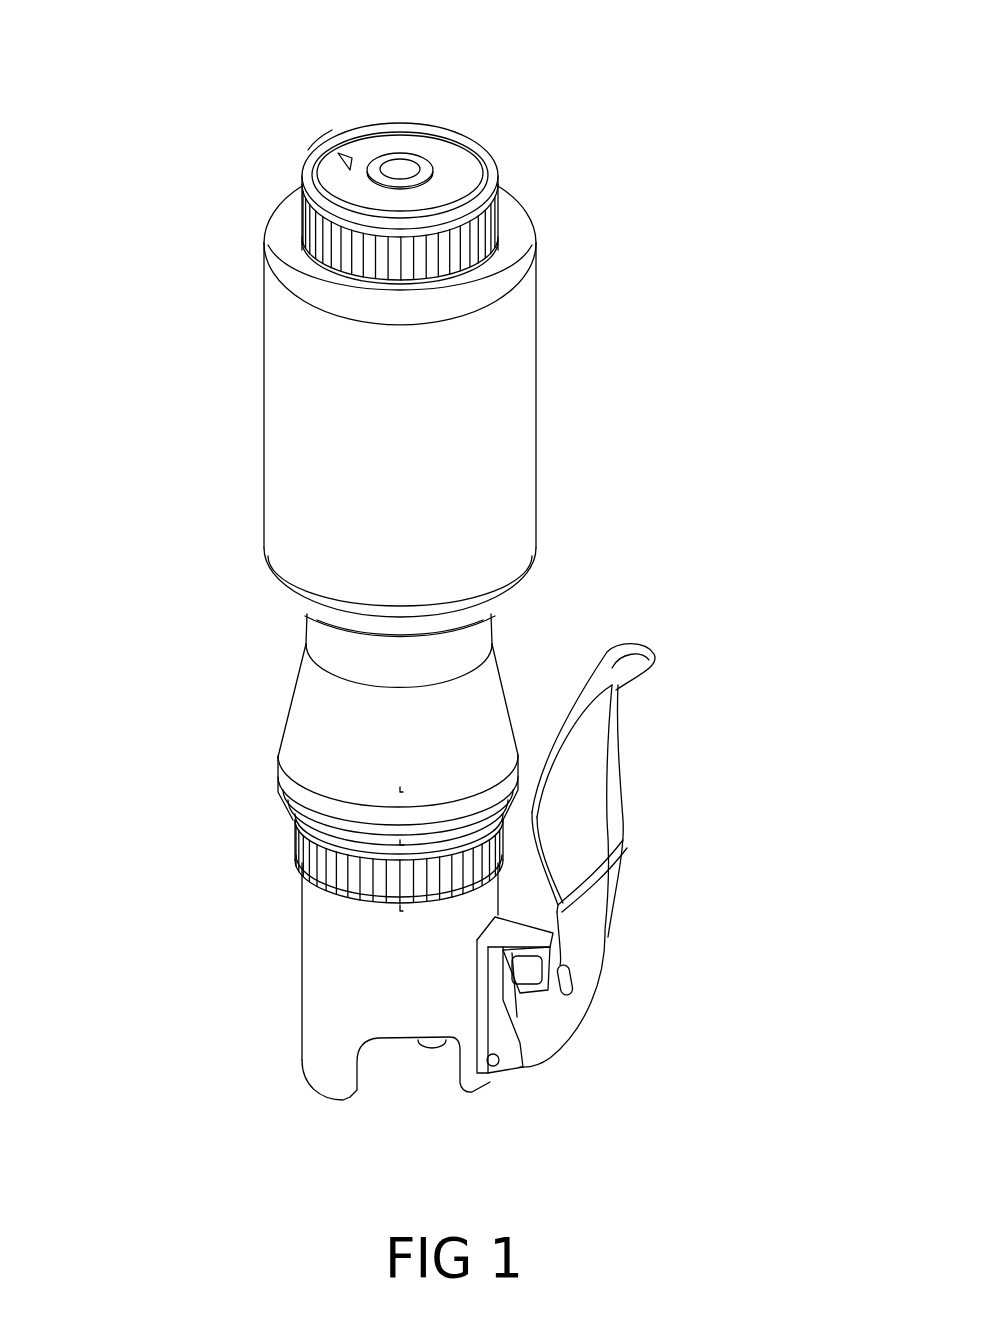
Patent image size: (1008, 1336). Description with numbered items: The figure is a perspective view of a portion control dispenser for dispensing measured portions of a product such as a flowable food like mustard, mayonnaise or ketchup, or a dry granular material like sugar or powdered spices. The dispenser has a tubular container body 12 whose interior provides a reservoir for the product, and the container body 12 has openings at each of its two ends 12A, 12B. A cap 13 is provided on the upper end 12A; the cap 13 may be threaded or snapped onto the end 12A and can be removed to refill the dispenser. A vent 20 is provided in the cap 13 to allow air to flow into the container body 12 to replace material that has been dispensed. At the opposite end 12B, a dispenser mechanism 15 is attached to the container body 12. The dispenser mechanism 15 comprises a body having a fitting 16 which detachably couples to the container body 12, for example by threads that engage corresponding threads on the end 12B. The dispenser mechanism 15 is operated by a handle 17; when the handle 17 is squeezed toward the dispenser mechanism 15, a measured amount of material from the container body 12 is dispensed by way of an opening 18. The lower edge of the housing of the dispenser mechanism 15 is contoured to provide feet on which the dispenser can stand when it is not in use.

The cap 13 is at (450, 167).
The vent 20 is at (333, 132).
The end 12A is at (517, 253).
The container body 12 is at (515, 487).
The end 12B is at (522, 757).
The fitting 16 is at (287, 833).
The dispenser mechanism 15 is at (255, 817).
The handle 17 is at (590, 797).
The opening 18 is at (433, 1070).